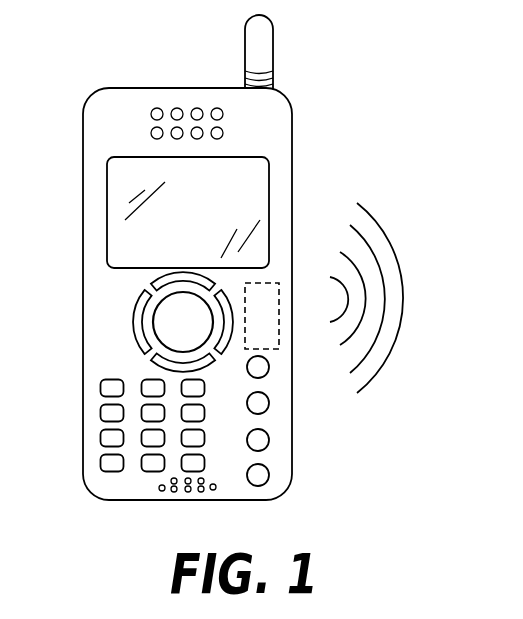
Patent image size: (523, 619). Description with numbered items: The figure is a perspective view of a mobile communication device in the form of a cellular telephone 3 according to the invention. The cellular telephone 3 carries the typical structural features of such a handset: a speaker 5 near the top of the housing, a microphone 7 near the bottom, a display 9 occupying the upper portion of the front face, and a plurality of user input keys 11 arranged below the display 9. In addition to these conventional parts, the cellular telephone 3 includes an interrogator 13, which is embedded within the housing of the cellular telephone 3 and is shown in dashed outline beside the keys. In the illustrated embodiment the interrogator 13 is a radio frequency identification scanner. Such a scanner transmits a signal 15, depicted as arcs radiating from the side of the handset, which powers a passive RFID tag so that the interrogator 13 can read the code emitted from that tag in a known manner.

The cellular telephone 3 is at (318, 97).
The speaker 5 is at (185, 107).
The microphone 7 is at (216, 488).
The display 9 is at (118, 187).
The user input keys 11 is at (133, 320).
The interrogator 13 is at (279, 338).
The signal 15 is at (378, 218).